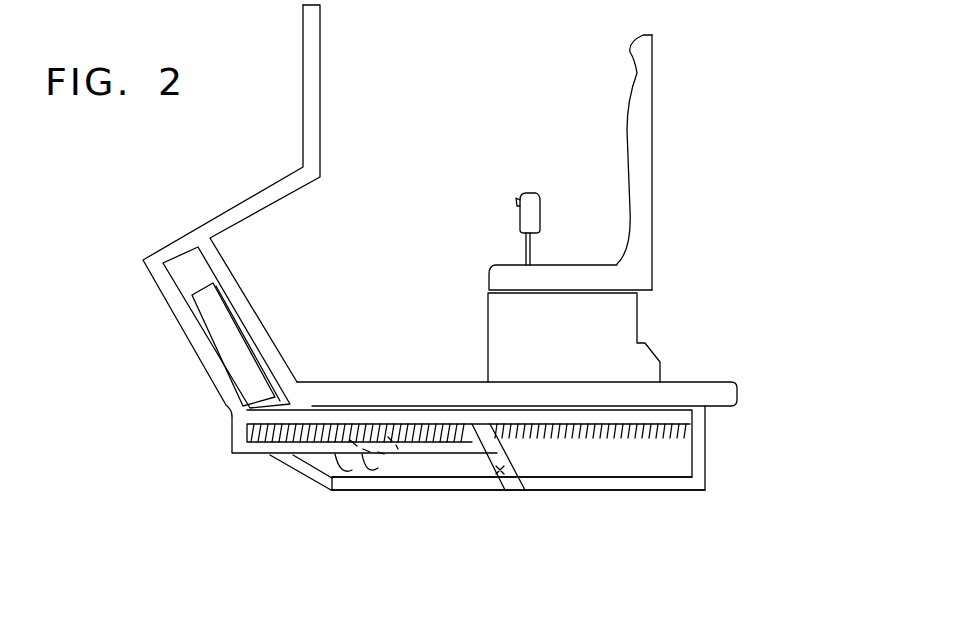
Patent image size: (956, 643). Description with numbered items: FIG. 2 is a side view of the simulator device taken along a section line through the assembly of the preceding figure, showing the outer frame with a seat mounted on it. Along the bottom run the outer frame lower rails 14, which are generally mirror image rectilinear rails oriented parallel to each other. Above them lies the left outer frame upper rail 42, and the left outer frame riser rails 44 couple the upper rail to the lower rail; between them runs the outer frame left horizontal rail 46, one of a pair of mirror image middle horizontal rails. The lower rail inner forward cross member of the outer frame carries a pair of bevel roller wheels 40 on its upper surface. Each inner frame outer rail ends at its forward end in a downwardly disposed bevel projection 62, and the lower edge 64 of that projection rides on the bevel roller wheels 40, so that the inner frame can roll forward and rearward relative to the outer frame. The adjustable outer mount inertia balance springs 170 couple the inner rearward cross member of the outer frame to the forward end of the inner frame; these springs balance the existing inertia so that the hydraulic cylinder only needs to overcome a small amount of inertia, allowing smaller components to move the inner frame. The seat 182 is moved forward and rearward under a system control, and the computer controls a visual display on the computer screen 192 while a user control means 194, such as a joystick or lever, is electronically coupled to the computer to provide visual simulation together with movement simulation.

The outer frame lower rails 14 is at (653, 485).
The bevel roller wheels 40 is at (328, 493).
The left outer frame upper rail 42 is at (303, 415).
The left outer frame riser rails 44 is at (497, 490).
The outer frame left horizontal rail 46 is at (270, 460).
The bevel projection 62 is at (388, 430).
The lower edge 64 is at (368, 425).
The adjustable outer mount inertia balance springs 170 is at (640, 420).
The seat 182 is at (652, 145).
The computer screen 192 is at (322, 82).
The user control means 194 is at (520, 195).